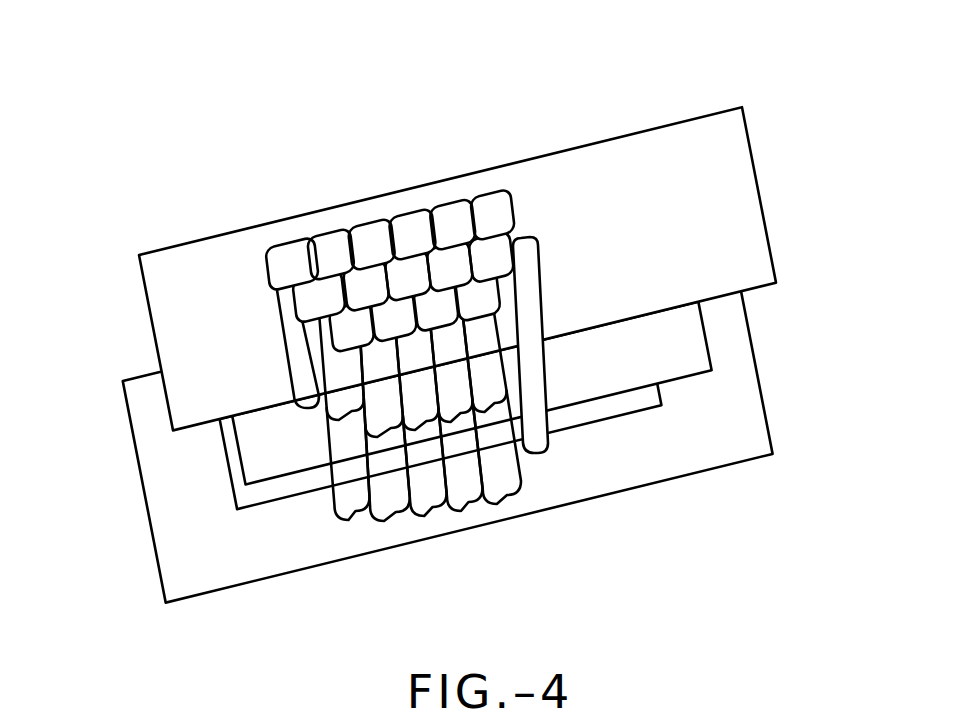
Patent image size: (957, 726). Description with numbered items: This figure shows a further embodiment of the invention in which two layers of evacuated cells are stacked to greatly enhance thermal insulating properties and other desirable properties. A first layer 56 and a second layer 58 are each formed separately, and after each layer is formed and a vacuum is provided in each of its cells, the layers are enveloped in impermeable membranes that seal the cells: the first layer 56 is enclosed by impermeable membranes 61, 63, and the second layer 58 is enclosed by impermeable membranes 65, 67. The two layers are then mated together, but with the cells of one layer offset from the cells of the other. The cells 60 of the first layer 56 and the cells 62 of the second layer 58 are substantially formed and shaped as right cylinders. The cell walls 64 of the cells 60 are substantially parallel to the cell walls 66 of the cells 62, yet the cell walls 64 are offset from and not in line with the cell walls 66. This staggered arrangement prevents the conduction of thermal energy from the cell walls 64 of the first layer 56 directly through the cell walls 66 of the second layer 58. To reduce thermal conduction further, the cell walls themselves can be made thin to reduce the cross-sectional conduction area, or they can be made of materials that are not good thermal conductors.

The first layer 56 is at (126, 284).
The second layer 58 is at (124, 490).
The cells 60 is at (385, 140).
The impermeable membrane 61 is at (746, 105).
The cells 62 is at (548, 495).
The impermeable membrane 63 is at (705, 337).
The cell walls 64 is at (535, 280).
The impermeable membrane 65 is at (613, 418).
The cell walls 66 is at (545, 378).
The impermeable membrane 67 is at (705, 469).